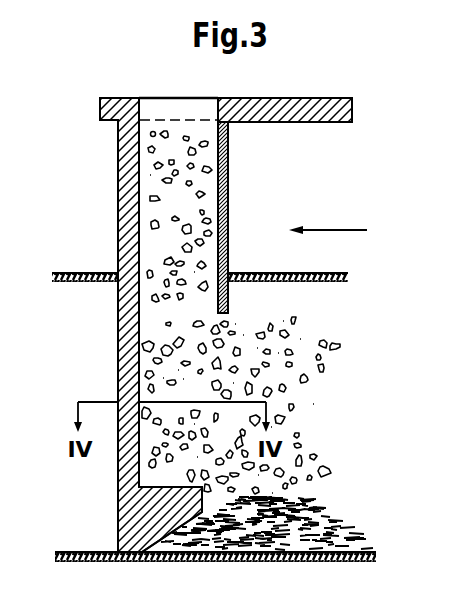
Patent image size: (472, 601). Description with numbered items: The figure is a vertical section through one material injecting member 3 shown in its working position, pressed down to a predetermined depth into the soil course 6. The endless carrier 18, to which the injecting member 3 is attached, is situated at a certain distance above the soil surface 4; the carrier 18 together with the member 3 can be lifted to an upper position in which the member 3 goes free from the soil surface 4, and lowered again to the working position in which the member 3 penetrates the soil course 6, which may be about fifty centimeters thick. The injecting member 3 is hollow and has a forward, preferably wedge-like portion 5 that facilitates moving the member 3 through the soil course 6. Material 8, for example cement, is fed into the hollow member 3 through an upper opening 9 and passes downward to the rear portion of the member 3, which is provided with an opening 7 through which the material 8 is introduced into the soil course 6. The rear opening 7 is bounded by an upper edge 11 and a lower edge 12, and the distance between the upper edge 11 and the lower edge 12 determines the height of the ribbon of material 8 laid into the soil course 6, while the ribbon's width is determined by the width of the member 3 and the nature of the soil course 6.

The material injecting member 3 is at (118, 205).
The soil surface 4 is at (337, 273).
The forward wedge-like portion 5 is at (118, 340).
The soil course 6 is at (362, 416).
The rear opening 7 is at (247, 372).
The material 8 is at (152, 147).
The upper opening 9 is at (178, 112).
The upper edge of the opening 11 is at (229, 313).
The lower edge of the opening 12 is at (337, 230).
The endless carrier 18 is at (286, 107).